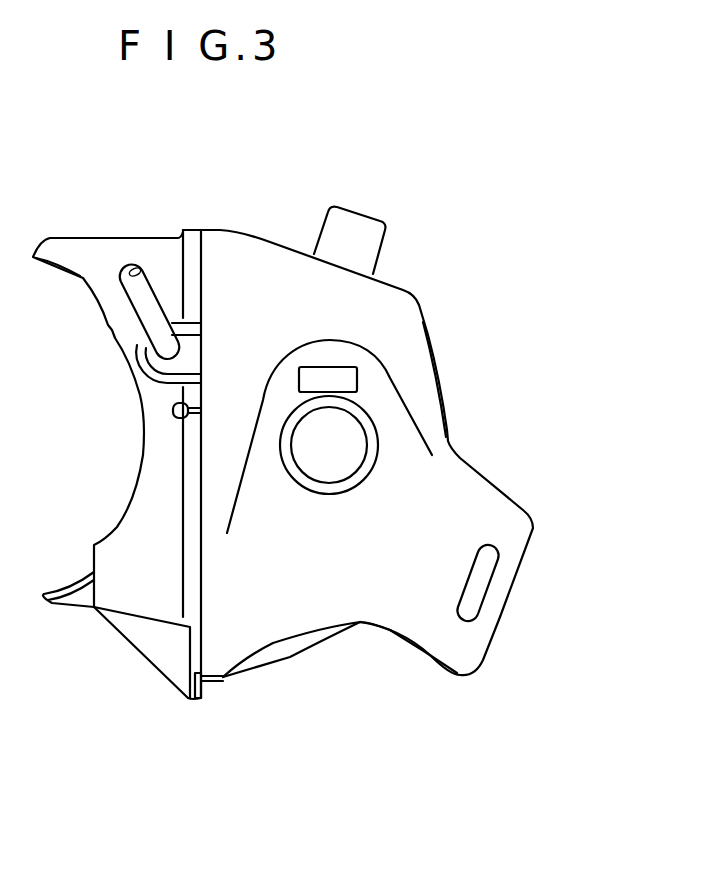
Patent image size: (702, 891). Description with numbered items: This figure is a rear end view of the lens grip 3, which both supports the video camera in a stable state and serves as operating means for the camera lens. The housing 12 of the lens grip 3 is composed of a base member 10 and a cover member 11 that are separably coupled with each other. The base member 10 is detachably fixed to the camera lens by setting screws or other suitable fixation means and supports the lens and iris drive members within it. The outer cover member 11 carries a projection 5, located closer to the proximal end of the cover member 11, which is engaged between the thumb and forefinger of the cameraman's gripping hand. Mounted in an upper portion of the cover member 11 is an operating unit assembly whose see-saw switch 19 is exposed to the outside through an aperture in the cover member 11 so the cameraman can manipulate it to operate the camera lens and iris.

The lens grip 3 is at (444, 284).
The projection 5 is at (517, 535).
The base member 10 is at (131, 237).
The cover member 11 is at (268, 240).
The housing 12 is at (247, 694).
The see-saw switch 19 is at (357, 231).